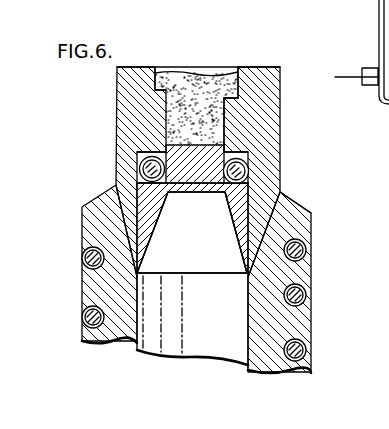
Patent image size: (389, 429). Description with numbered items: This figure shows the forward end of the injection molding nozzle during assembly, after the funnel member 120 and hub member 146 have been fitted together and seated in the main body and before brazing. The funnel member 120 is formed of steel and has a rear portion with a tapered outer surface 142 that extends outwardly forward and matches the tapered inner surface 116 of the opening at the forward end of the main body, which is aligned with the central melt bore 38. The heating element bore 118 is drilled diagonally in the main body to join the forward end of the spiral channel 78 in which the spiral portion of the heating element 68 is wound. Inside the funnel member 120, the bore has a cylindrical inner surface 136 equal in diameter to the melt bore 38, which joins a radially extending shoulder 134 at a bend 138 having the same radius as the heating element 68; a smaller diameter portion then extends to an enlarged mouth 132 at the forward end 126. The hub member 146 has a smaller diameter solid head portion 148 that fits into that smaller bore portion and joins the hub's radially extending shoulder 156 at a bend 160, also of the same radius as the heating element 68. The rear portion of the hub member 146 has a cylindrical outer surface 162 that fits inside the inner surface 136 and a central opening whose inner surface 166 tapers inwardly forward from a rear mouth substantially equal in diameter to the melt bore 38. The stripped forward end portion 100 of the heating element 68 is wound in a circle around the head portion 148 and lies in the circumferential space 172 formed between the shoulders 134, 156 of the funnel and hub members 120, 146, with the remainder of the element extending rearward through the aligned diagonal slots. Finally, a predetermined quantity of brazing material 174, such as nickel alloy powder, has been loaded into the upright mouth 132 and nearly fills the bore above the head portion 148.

The central melt bore 38 is at (190, 347).
The heating element 68 is at (311, 348).
The spiral channel 78 is at (311, 254).
The forward end portion 100 is at (248, 172).
The inner surface 116 is at (242, 266).
The heating element bore 118 is at (311, 234).
The funnel member 120 is at (272, 136).
The forward end 126 is at (265, 67).
The enlarged mouth 132 is at (157, 67).
The radially extending shoulder 134 is at (160, 156).
The cylindrical inner surface 136 is at (138, 248).
The bend 138 is at (140, 163).
The tapered outer surface 142 is at (280, 212).
The hub member 146 is at (240, 228).
The head portion 148 is at (225, 150).
The radially extending shoulder 156 is at (137, 176).
The bend 160 is at (166, 193).
The cylindrical outer surface 162 is at (130, 218).
The inner surface 166 is at (152, 218).
The circumferential space 172 is at (226, 160).
The brazing material 174 is at (200, 88).